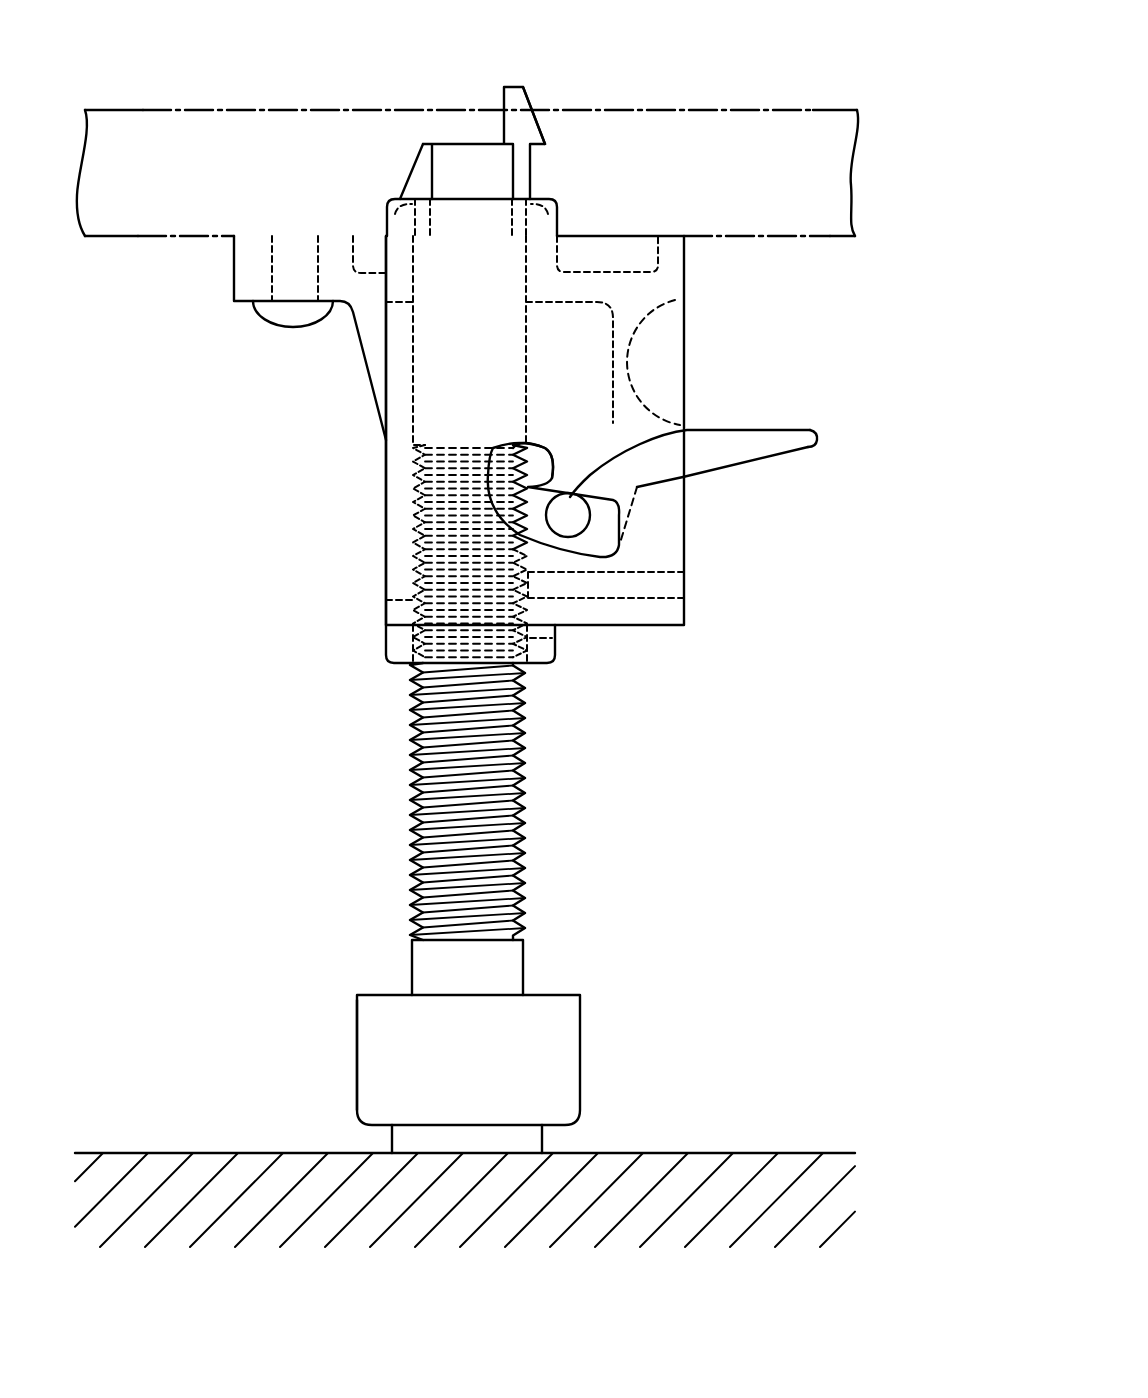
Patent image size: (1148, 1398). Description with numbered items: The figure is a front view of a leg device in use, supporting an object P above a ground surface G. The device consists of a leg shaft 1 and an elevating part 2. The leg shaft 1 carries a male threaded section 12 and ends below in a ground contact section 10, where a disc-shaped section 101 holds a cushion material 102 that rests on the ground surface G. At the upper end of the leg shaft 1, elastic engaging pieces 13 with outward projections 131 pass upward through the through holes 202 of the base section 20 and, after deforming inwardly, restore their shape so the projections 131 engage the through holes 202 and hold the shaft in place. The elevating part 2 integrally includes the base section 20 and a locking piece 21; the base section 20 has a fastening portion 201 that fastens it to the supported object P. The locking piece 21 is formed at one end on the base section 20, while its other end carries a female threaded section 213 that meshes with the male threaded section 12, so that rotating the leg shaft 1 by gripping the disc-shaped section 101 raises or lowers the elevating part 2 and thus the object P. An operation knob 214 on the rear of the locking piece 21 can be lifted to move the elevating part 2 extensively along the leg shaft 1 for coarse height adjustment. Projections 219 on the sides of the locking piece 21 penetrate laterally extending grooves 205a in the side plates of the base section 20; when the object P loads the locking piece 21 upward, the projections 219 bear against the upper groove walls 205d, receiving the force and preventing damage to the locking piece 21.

The supported object P is at (815, 137).
The elastic engaging pieces 13 is at (422, 162).
The projection 131 is at (403, 191).
The through holes 202 is at (560, 210).
The fastening portion 201 is at (241, 280).
The base section 20 is at (662, 553).
The elevating part 2 is at (386, 503).
The female threaded section 213 is at (423, 520).
The projections 219 is at (568, 500).
The grooves 205a is at (607, 519).
The upper groove walls 205d is at (692, 430).
The locking piece 21 is at (637, 487).
The operation knob 214 is at (800, 443).
The leg shaft 1 is at (497, 855).
The male threaded section 12 is at (493, 802).
The ground contact section 10 is at (567, 1053).
The disc-shaped section 101 is at (567, 1078).
The cushion material 102 is at (493, 1138).
The ground surface G is at (800, 1152).